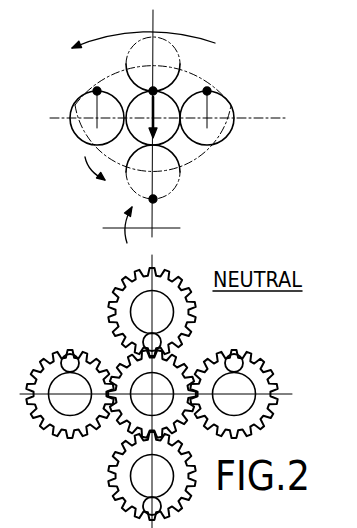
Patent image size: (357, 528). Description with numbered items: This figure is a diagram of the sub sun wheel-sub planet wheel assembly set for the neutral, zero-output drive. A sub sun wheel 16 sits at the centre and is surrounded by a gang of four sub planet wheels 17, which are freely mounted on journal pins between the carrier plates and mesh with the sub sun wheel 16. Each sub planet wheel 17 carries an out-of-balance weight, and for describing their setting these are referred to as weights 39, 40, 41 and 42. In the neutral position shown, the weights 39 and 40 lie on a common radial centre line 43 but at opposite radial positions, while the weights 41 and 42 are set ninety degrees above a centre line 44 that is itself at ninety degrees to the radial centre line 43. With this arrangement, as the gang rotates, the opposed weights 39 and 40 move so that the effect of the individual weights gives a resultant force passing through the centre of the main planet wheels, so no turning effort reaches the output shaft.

The sub sun wheel 16 is at (168, 138).
The sub planet wheel 17 is at (173, 48).
The weight 39 is at (146, 81).
The weight 40 is at (156, 200).
The weight 41 is at (100, 80).
The weight 42 is at (208, 90).
The radial centre line 43 is at (155, 18).
The centre line 44 is at (283, 117).